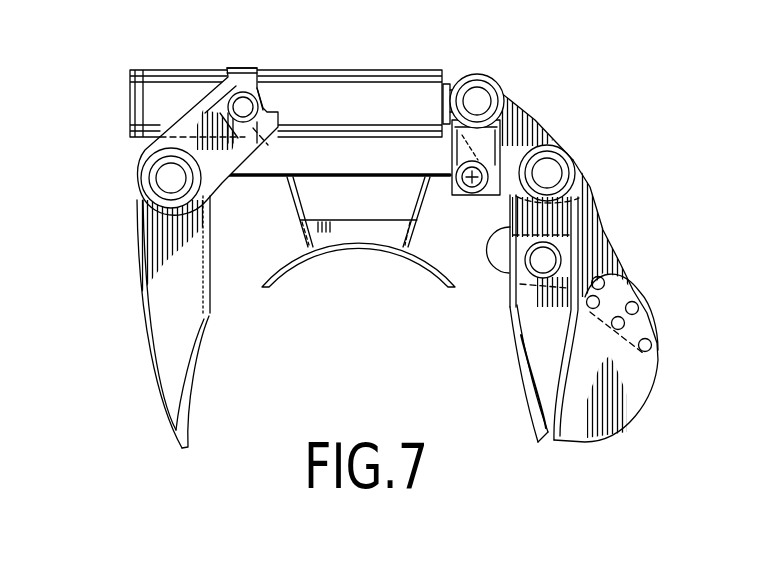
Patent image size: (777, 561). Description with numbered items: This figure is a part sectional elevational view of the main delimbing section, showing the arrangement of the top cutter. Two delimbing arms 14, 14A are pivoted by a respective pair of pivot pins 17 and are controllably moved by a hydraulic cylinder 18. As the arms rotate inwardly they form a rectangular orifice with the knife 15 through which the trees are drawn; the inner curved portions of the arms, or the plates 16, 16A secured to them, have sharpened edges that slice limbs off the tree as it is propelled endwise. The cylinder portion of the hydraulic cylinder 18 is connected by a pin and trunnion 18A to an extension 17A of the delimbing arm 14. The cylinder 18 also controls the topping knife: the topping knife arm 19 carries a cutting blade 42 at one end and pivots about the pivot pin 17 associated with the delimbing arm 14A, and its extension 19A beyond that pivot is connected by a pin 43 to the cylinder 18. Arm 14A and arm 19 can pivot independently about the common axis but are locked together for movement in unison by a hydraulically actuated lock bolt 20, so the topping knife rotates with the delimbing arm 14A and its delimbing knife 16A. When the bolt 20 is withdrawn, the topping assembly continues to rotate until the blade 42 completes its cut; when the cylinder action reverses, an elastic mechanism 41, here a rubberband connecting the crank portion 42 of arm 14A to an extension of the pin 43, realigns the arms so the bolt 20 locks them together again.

The delimbing arm 14 is at (213, 310).
The delimbing arm 14A is at (527, 302).
The knife 15 is at (405, 258).
The plate 16 is at (185, 377).
The delimbing knife 16A is at (525, 360).
The pivot pin 17 is at (173, 178).
The extension of the delimbing arm 17A is at (212, 215).
The hydraulic cylinder 18 is at (340, 87).
The pin and trunnion 18A is at (247, 110).
The topping knife arm 19 is at (602, 267).
The arm extension 19A is at (540, 138).
The hydraulically actuated lock bolt 20 is at (545, 260).
The elastic mechanism 41 is at (530, 118).
The cutting blade 42 is at (469, 194).
The pin 43 is at (479, 101).